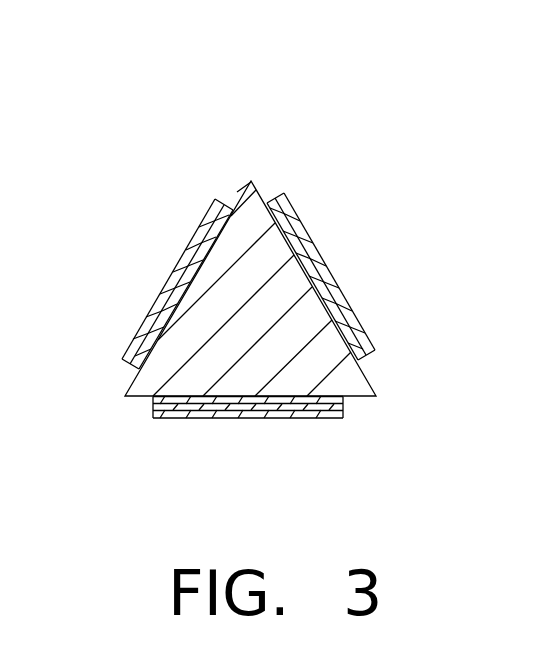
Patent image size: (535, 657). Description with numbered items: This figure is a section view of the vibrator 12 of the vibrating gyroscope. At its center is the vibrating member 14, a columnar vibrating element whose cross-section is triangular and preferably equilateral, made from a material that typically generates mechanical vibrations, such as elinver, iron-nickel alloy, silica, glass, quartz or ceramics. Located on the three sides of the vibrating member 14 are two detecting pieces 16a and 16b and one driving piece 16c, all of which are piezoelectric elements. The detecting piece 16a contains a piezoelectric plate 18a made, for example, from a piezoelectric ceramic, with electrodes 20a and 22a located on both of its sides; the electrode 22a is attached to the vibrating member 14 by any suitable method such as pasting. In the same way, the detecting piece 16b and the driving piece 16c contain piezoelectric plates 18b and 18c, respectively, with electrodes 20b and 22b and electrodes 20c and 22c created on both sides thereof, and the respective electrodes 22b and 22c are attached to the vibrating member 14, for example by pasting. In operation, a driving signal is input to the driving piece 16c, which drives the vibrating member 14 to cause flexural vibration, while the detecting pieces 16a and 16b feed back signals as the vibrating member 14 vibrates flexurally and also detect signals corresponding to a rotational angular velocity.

The vibrator 12 is at (58, 92).
The vibrating member 14 is at (357, 379).
The detecting piece 16a is at (145, 259).
The detecting piece 16b is at (352, 254).
The driving piece 16c is at (241, 436).
The piezoelectric plate 18a is at (178, 277).
The piezoelectric plate 18b is at (342, 284).
The piezoelectric plate 18c is at (278, 414).
The electrode 20a is at (198, 232).
The electrode 20b is at (310, 240).
The electrode 20c is at (223, 414).
The electrode 22a is at (143, 337).
The electrode 22b is at (360, 334).
The electrode 22c is at (343, 401).